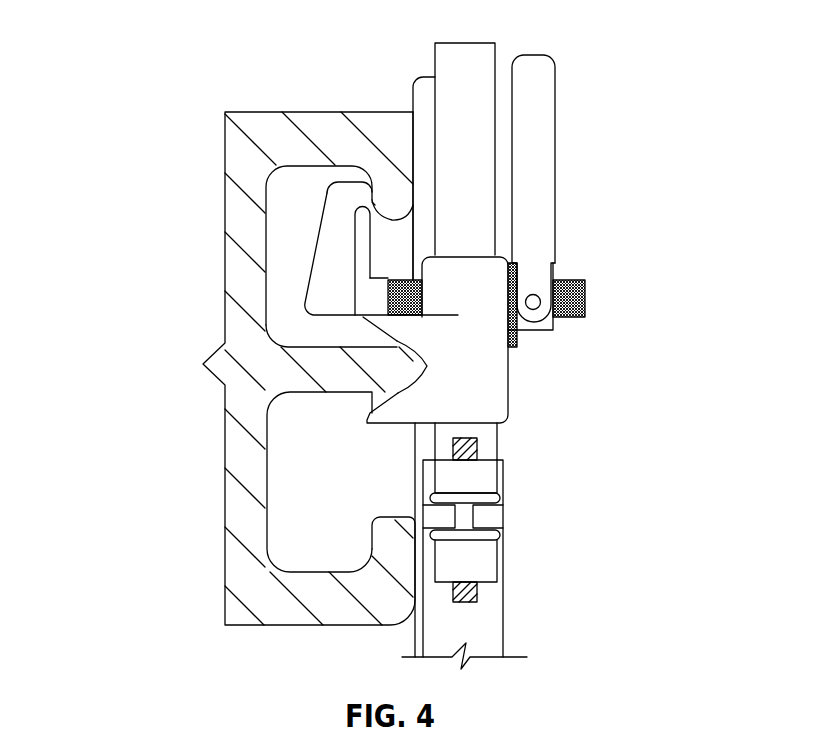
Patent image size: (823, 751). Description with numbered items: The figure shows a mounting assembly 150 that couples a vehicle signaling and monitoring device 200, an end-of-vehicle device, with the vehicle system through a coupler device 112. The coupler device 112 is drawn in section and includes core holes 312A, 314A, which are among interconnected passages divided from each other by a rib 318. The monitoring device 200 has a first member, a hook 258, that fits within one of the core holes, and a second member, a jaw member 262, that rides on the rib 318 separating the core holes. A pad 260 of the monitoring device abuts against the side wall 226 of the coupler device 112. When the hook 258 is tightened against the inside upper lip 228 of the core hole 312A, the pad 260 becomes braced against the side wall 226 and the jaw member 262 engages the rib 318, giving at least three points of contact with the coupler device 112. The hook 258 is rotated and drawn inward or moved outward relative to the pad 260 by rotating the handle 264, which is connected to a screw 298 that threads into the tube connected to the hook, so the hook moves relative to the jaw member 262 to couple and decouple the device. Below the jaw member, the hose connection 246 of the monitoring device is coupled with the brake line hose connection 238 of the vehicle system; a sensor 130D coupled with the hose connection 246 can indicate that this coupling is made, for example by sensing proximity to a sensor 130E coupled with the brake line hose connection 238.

The mounting assembly 150 is at (147, 70).
The vehicle signaling and monitoring device 200 is at (553, 50).
The coupler device 112 is at (257, 123).
The core hole 312A is at (300, 182).
The core hole 314A is at (327, 550).
The side wall 226 is at (413, 143).
The inside upper lip 228 is at (385, 194).
The hook 258 is at (330, 262).
The rib 318 is at (325, 363).
The pad 260 is at (428, 83).
The handle 264 is at (543, 165).
The screw 298 is at (568, 318).
The jaw member 262 is at (492, 385).
The hose connection 246 is at (487, 433).
The sensor 130D is at (477, 448).
The sensor 130E is at (477, 595).
The brake line hose connection 238 is at (487, 620).